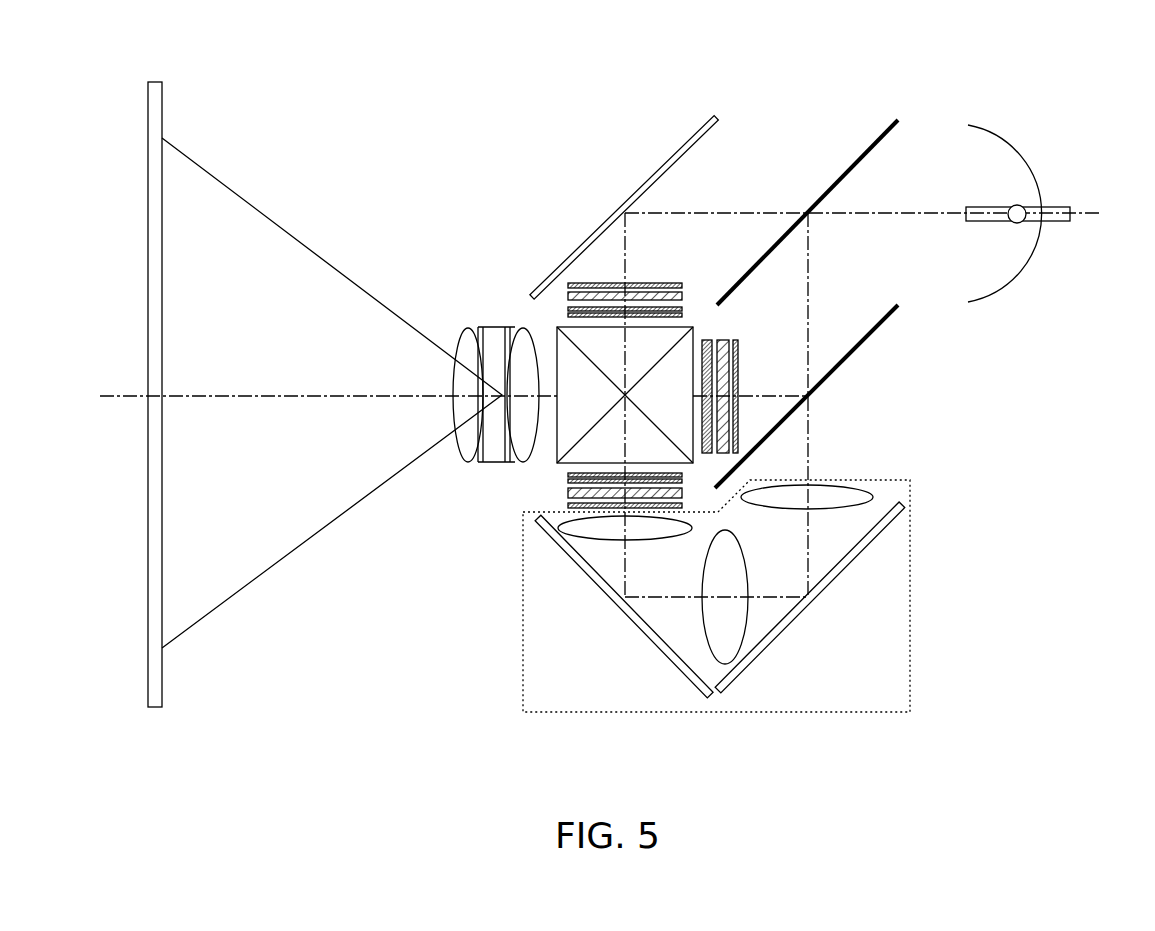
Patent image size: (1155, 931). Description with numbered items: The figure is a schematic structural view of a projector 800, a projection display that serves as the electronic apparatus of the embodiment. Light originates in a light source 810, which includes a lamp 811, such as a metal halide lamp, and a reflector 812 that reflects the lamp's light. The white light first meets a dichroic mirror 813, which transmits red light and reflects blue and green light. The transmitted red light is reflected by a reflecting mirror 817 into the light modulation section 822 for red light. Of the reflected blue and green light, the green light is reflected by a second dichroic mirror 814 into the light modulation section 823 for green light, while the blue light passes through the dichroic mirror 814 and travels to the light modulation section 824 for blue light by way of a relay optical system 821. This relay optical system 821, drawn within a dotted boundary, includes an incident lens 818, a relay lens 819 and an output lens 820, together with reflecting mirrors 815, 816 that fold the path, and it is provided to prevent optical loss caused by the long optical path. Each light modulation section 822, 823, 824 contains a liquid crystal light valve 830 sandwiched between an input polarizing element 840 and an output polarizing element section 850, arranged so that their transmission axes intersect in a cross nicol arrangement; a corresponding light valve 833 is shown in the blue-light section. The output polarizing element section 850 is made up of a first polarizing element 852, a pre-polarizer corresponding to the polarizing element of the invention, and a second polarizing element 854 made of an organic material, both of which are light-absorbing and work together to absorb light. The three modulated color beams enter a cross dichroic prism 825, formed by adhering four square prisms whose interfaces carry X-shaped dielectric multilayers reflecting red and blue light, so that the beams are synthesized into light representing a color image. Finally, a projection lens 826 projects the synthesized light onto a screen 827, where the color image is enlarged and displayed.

The projector 800 is at (232, 126).
The light source 810 is at (993, 152).
The lamp 811 is at (1022, 206).
The reflector 812 is at (1023, 270).
The dichroic mirror 813 is at (863, 155).
The dichroic mirror 814 is at (880, 318).
The reflecting mirror 815 is at (870, 540).
The reflecting mirror 816 is at (638, 625).
The reflecting mirror 817 is at (663, 165).
The incident lens 818 is at (832, 488).
The relay lens 819 is at (740, 617).
The output lens 820 is at (595, 535).
The relay optical system 821 is at (912, 642).
The light modulation section 822 is at (587, 212).
The light modulation section 823 is at (752, 360).
The light modulation section 824 is at (626, 515).
The cross dichroic prism 825 is at (683, 335).
The projection lens 826 is at (540, 472).
The screen 827 is at (155, 707).
The liquid crystal light valve 830 is at (568, 296).
The liquid crystal light valve 833 is at (682, 497).
The input polarizing element 840 is at (590, 283).
The output polarizing element section 850 is at (551, 267).
The first polarizing element 852 is at (568, 308).
The second polarizing element 854 is at (568, 315).